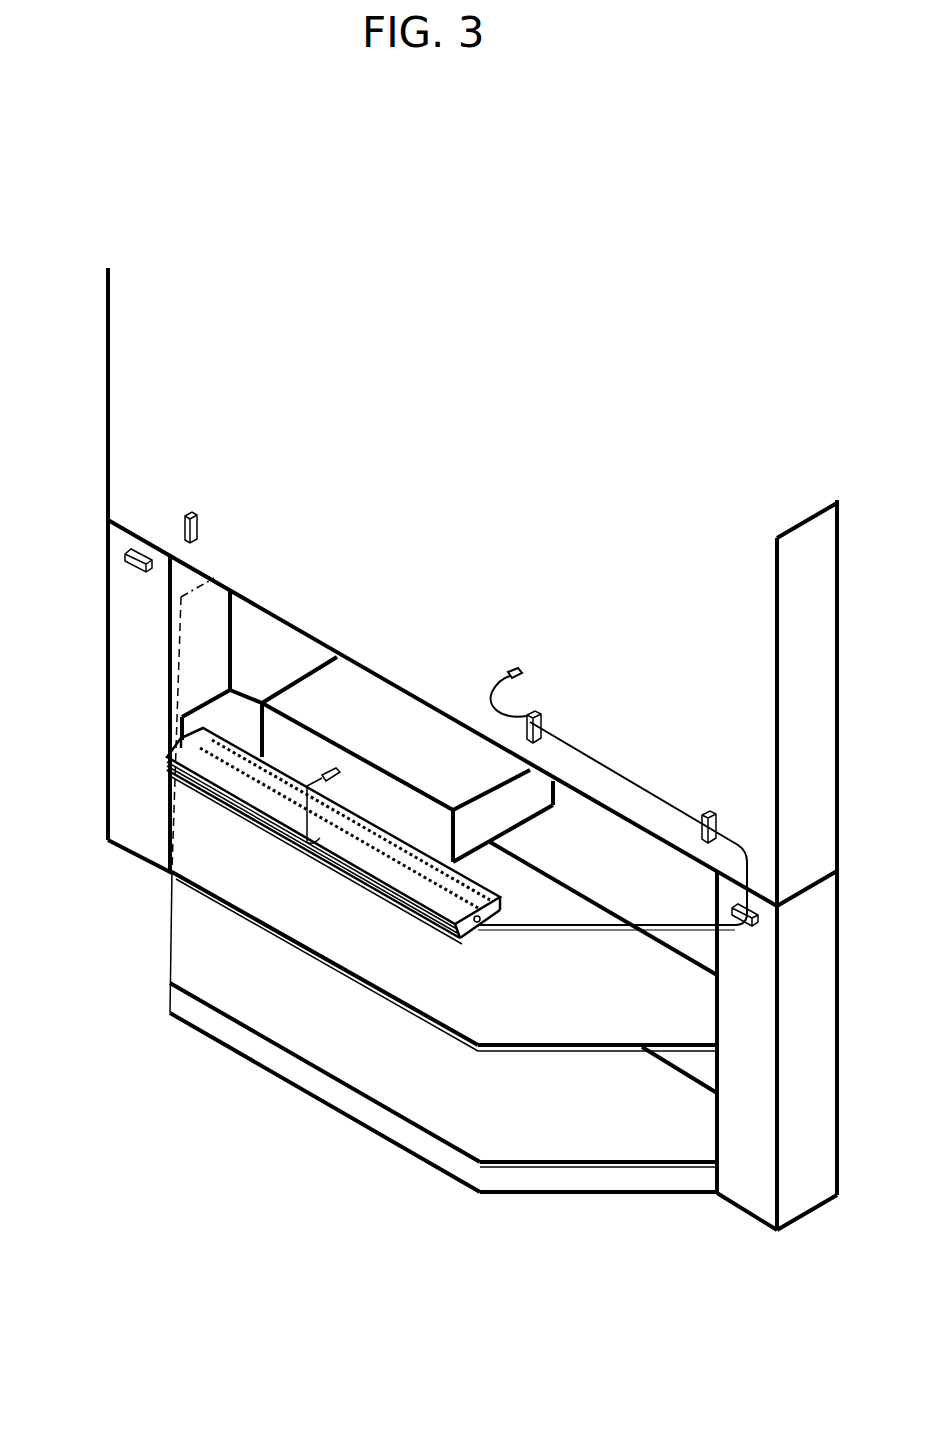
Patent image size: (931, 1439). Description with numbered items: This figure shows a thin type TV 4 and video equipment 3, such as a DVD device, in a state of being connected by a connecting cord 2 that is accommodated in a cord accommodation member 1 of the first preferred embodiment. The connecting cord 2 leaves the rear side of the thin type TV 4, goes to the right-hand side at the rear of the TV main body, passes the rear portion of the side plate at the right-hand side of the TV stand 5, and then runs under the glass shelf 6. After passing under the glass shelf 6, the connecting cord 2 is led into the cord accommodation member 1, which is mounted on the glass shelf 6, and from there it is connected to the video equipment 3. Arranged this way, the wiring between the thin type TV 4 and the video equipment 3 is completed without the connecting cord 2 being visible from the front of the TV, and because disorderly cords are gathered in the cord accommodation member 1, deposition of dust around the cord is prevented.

The cord accommodation member 1 is at (277, 830).
The connecting cord 2 is at (622, 775).
The video equipment 3 is at (285, 733).
The thin type TV 4 is at (362, 417).
The TV stand 5 is at (128, 617).
The glass shelf 6 is at (562, 908).